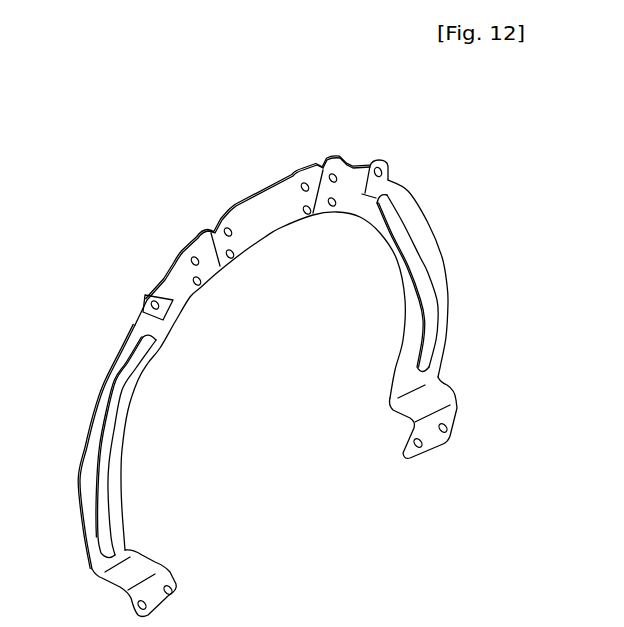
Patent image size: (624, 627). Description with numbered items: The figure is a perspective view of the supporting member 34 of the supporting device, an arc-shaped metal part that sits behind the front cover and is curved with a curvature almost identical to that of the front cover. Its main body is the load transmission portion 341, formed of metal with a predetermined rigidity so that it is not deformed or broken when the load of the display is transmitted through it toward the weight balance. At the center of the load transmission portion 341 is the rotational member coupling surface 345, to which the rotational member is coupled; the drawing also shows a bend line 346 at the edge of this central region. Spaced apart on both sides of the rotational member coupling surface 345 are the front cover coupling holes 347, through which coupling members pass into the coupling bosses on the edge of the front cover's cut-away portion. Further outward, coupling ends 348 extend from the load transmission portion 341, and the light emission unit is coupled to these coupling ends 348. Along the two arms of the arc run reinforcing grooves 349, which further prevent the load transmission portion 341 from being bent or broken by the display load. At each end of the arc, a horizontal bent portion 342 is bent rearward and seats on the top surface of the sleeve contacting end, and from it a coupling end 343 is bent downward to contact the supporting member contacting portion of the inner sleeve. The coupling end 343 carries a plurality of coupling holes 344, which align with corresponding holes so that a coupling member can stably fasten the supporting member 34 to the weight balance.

The supporting member 34 is at (504, 122).
The load transmission portion 341 is at (100, 393).
The horizontal bent portion 342 is at (442, 393).
The coupling end 343 is at (450, 420).
The coupling holes 344 is at (452, 433).
The rotational member coupling surface 345 is at (268, 212).
The bending line 346 is at (303, 211).
The front cover coupling holes 347 is at (340, 168).
The coupling ends 348 is at (388, 169).
The reinforcing grooves 349 is at (410, 232).